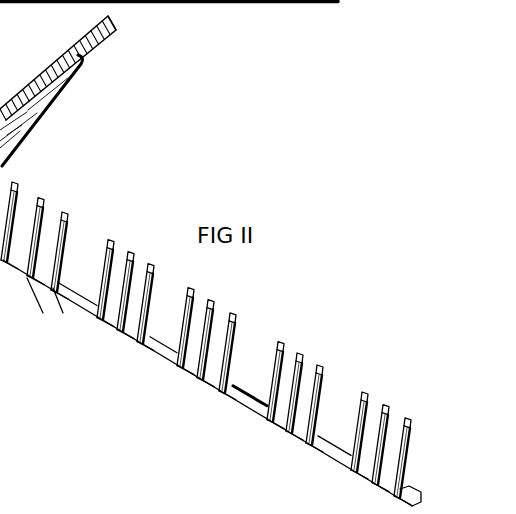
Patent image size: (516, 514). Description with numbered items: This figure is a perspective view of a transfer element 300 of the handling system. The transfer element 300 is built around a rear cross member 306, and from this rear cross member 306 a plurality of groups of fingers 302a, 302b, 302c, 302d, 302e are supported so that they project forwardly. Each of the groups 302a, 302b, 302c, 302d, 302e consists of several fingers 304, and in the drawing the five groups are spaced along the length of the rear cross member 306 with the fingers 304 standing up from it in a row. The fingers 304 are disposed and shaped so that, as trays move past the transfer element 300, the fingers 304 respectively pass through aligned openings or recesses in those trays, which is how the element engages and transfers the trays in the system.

The transfer element 300 is at (107, 37).
The first group of fingers 302a is at (80, 219).
The second group of fingers 302b is at (172, 274).
The third group of fingers 302c is at (265, 328).
The fourth group of fingers 302d is at (350, 387).
The fifth group of fingers 302e is at (358, 380).
The fingers 304 is at (45, 307).
The rear cross member 306 is at (250, 405).